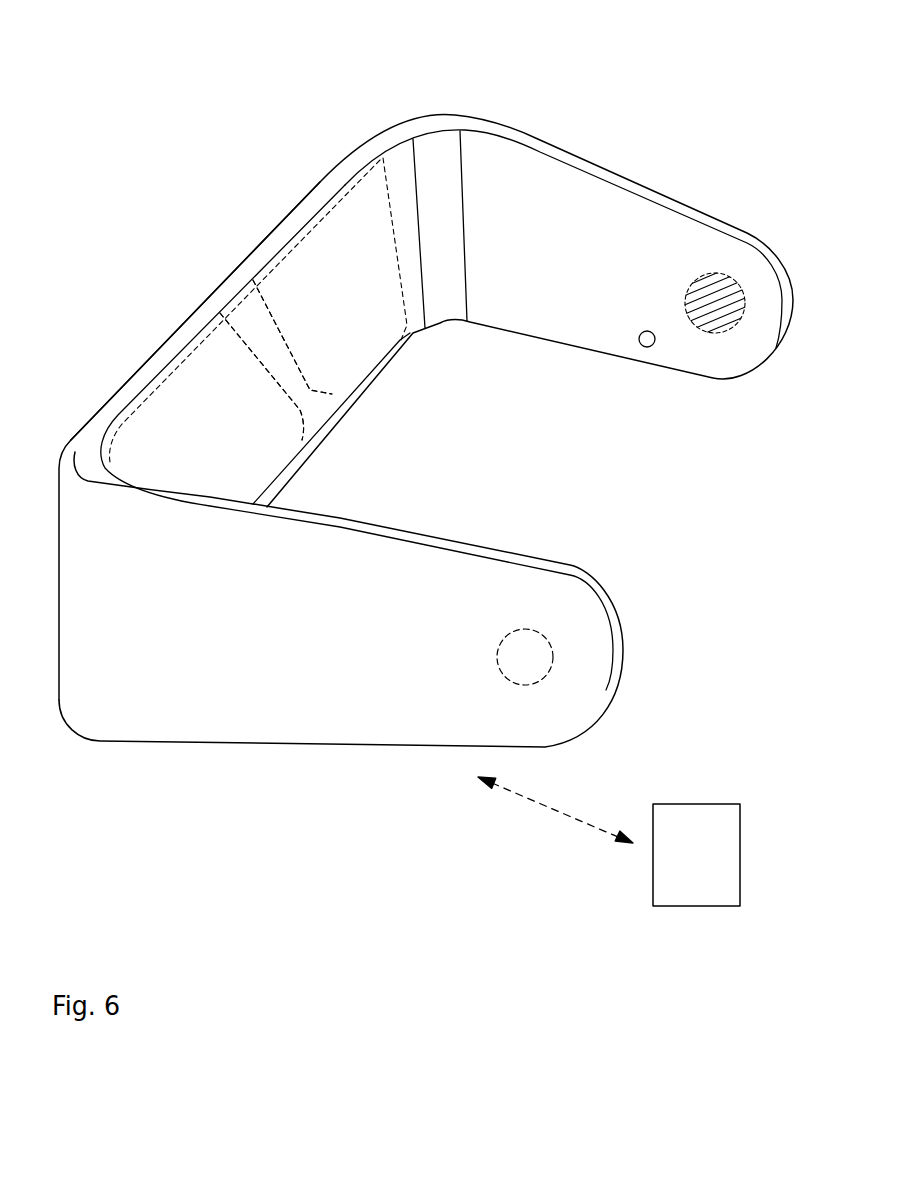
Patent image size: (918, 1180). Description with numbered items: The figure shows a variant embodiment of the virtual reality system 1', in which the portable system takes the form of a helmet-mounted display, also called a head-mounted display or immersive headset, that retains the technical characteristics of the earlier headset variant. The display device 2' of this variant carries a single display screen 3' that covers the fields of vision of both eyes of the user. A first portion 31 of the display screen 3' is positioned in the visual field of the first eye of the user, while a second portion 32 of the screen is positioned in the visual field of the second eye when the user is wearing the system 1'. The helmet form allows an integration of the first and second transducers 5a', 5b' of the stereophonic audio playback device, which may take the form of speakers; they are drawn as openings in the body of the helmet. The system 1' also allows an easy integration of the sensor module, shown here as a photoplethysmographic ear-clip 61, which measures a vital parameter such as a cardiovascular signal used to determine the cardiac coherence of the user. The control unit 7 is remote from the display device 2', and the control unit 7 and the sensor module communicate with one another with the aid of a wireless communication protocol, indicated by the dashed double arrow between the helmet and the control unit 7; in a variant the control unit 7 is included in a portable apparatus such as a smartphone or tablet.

The virtual reality system 1' is at (426, 385).
The display device 2' is at (195, 284).
The display screen 3' is at (259, 310).
The first portion of the display screen 31 is at (267, 437).
The second portion of the display screen 32 is at (360, 333).
The first transducer 5a' is at (583, 680).
The second transducer 5b' is at (721, 350).
The ear-clip 61 is at (645, 347).
The control unit 7 is at (700, 832).